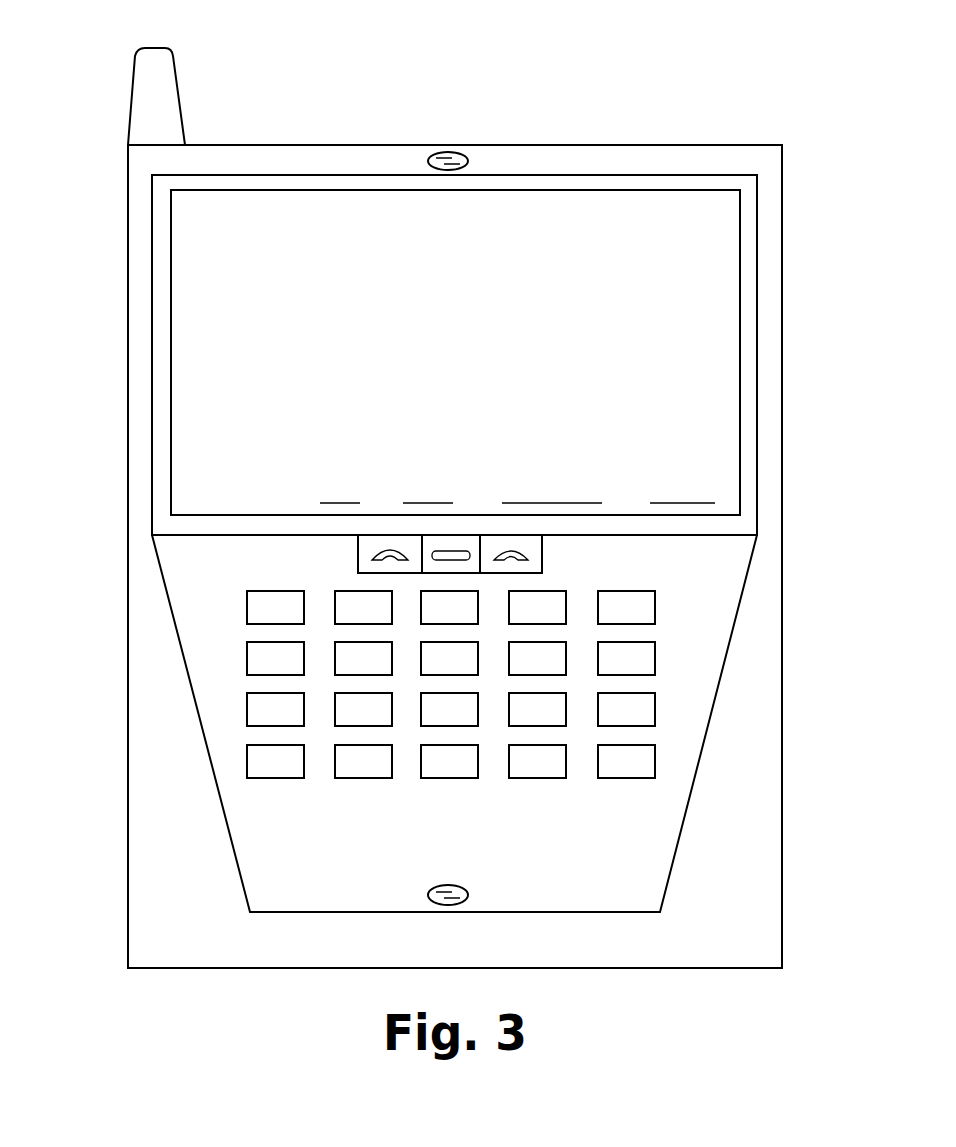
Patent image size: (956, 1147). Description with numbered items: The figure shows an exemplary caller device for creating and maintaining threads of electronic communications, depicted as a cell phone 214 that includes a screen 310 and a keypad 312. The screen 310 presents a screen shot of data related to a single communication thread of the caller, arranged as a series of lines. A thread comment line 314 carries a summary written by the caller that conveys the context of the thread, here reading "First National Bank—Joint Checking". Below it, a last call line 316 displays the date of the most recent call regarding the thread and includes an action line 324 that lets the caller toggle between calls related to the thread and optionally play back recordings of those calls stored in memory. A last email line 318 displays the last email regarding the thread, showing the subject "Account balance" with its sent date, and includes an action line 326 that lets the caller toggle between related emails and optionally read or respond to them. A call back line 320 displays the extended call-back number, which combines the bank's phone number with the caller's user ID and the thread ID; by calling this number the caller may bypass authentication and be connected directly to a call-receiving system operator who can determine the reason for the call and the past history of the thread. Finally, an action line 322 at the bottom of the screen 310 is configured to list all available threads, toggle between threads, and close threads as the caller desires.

The cell phone 214 is at (705, 145).
The screen 310 is at (727, 338).
The keypad 312 is at (225, 657).
The thread comment line 314 is at (195, 272).
The last call line 316 is at (195, 328).
The last email line 318 is at (195, 384).
The call back line 320 is at (195, 446).
The action line 322 is at (195, 498).
The action line 324 is at (693, 320).
The action line 326 is at (730, 400).